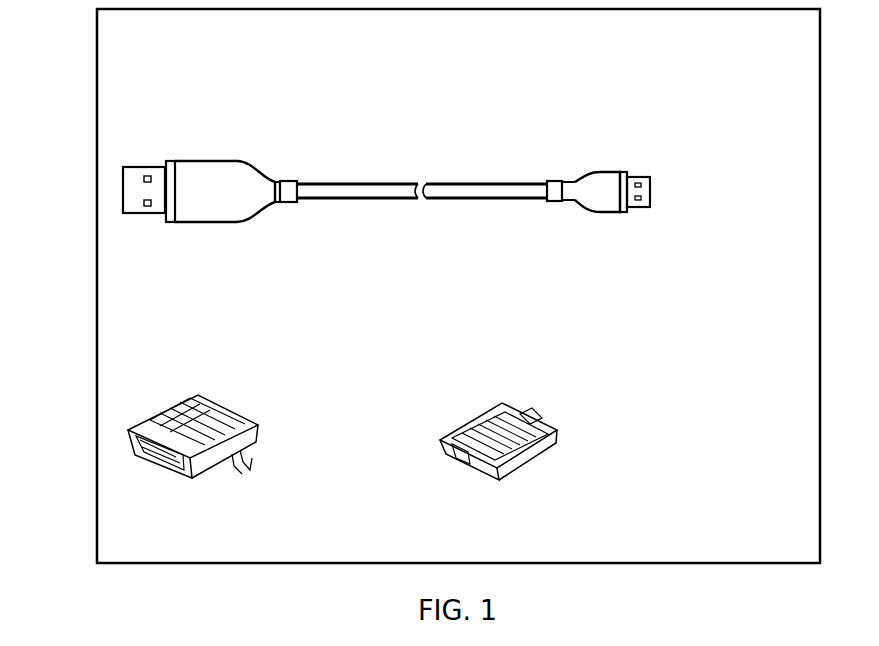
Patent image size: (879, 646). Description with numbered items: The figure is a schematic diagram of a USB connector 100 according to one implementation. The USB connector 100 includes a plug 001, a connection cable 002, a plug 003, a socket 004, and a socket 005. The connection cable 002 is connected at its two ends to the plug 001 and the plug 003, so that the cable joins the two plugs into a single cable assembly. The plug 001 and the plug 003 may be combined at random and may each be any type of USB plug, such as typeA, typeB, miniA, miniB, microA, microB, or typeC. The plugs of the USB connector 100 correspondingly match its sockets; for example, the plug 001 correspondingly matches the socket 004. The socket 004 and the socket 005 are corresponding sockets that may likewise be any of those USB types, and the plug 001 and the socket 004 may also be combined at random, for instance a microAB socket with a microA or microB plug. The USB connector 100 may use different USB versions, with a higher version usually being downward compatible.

The USB connector 100 is at (60, 365).
The plug 001 is at (168, 160).
The connection cable 002 is at (397, 183).
The plug 003 is at (624, 171).
The socket 004 is at (185, 478).
The socket 005 is at (492, 472).